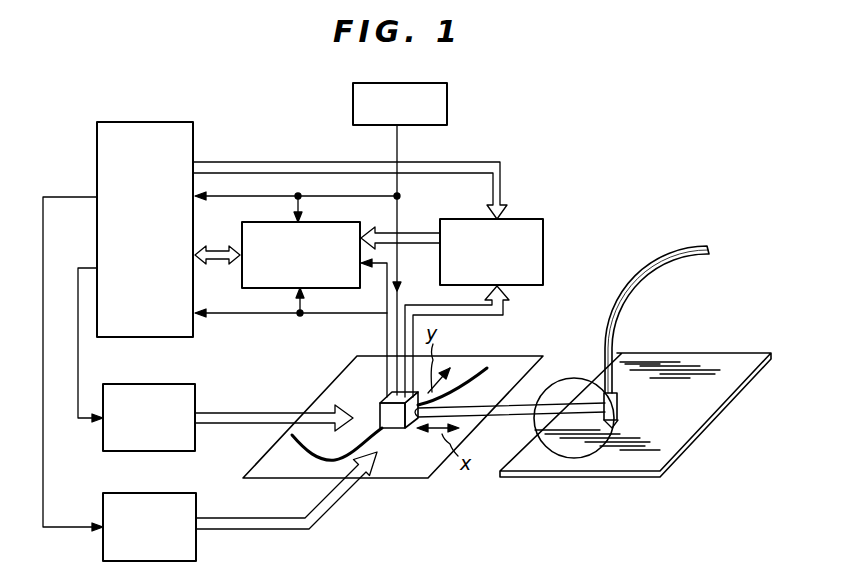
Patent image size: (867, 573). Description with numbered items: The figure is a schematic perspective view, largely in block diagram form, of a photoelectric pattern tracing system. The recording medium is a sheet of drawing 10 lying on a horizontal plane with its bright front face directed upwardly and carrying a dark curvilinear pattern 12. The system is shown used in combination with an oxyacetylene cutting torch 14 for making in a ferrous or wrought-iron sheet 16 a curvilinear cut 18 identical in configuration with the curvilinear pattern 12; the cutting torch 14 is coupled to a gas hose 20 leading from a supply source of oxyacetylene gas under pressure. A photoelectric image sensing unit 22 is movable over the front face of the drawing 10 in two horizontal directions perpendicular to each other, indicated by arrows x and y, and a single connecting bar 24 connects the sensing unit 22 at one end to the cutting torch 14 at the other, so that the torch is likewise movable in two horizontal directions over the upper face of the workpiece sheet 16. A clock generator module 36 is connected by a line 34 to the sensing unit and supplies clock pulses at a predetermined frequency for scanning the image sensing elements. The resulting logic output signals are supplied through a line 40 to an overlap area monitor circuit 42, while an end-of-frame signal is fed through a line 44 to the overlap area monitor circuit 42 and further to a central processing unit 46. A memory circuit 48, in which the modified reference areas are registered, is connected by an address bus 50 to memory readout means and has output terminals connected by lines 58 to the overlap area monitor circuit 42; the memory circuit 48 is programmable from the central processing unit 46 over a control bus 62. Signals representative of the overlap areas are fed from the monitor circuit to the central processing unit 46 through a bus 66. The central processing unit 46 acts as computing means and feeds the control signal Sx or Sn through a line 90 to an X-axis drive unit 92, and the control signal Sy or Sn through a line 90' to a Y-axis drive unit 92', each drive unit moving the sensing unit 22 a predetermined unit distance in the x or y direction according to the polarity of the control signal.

The sheet of drawing 10 is at (375, 479).
The curvilinear pattern 12 is at (312, 457).
The oxyacetylene cutting torch 14 is at (592, 390).
The ferrous or wrought-iron sheet 16 is at (706, 426).
The curvilinear cut 18 is at (568, 459).
The gas hose 20 is at (703, 248).
The photoelectric image sensing unit 22 is at (400, 429).
The connecting bar 24 is at (500, 417).
The line 34 is at (398, 144).
The clock generator module 36 is at (448, 106).
The line 40 is at (383, 266).
The overlap area monitor circuit 42 is at (355, 222).
The line 44 is at (326, 314).
The central processing unit 46 is at (195, 157).
The memory circuit 48 is at (544, 254).
The address bus 50 is at (500, 318).
The lines 58 is at (428, 233).
The control bus 62 is at (316, 162).
The bus 66 is at (218, 266).
The line 90 is at (78, 326).
The line 90' is at (73, 341).
The X-axis drive unit 92 is at (224, 402).
The Y-axis drive unit 92' is at (236, 506).